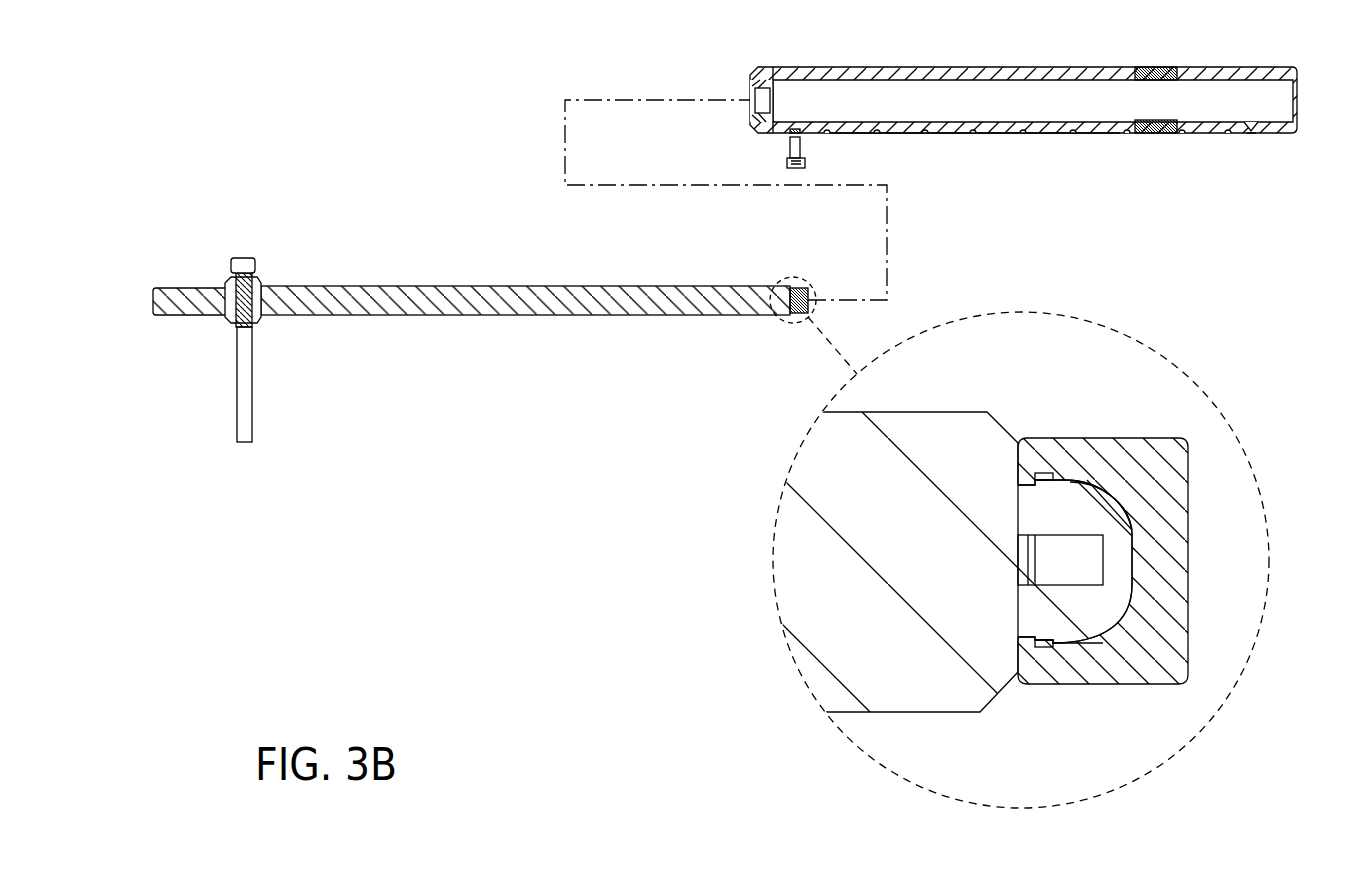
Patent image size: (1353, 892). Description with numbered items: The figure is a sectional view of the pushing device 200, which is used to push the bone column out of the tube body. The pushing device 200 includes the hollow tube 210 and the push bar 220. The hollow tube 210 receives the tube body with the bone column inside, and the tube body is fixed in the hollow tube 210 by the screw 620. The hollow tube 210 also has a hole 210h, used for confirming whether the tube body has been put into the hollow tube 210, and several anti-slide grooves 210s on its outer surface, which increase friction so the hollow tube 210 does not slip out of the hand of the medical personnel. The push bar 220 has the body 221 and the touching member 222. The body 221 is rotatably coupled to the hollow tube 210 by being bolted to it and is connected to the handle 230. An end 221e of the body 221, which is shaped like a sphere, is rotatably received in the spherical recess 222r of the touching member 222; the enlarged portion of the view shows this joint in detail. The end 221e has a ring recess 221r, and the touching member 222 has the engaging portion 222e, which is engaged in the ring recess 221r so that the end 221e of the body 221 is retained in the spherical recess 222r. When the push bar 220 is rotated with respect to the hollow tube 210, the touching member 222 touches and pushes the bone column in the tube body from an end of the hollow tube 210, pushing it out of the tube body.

The pushing device 200 is at (343, 107).
The hollow tube 210 is at (1054, 141).
The anti-slide grooves 210s is at (976, 140).
The hole 210h is at (1251, 141).
The screw 620 is at (806, 152).
The push bar 220 is at (722, 243).
The body 221 is at (553, 286).
The touching member 222 is at (797, 288).
The end 221e is at (1070, 490).
The engaging portion 222e is at (1017, 478).
The ring recess 221r is at (1044, 656).
The spherical recess 222r is at (1094, 656).
The handle 230 is at (247, 401).